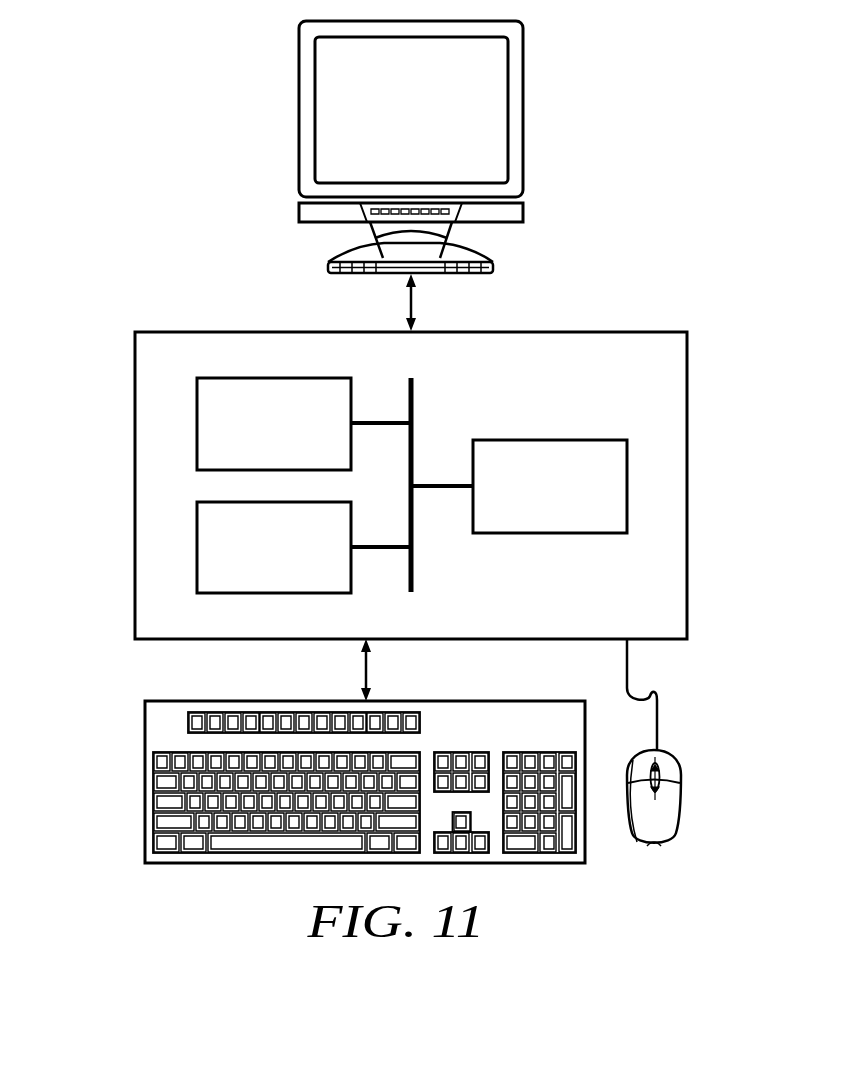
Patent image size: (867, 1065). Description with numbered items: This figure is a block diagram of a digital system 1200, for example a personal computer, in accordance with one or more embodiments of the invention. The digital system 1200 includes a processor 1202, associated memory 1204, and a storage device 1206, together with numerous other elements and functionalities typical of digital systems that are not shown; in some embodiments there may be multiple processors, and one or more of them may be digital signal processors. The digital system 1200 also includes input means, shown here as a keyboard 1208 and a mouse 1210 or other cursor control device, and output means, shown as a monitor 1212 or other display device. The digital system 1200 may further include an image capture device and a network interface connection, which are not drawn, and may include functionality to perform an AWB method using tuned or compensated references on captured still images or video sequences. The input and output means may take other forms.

The digital system 1200 is at (681, 108).
The processor 1202 is at (512, 503).
The memory 1204 is at (312, 442).
The storage device 1206 is at (312, 567).
The keyboard 1208 is at (144, 783).
The mouse 1210 is at (681, 798).
The monitor 1212 is at (299, 110).